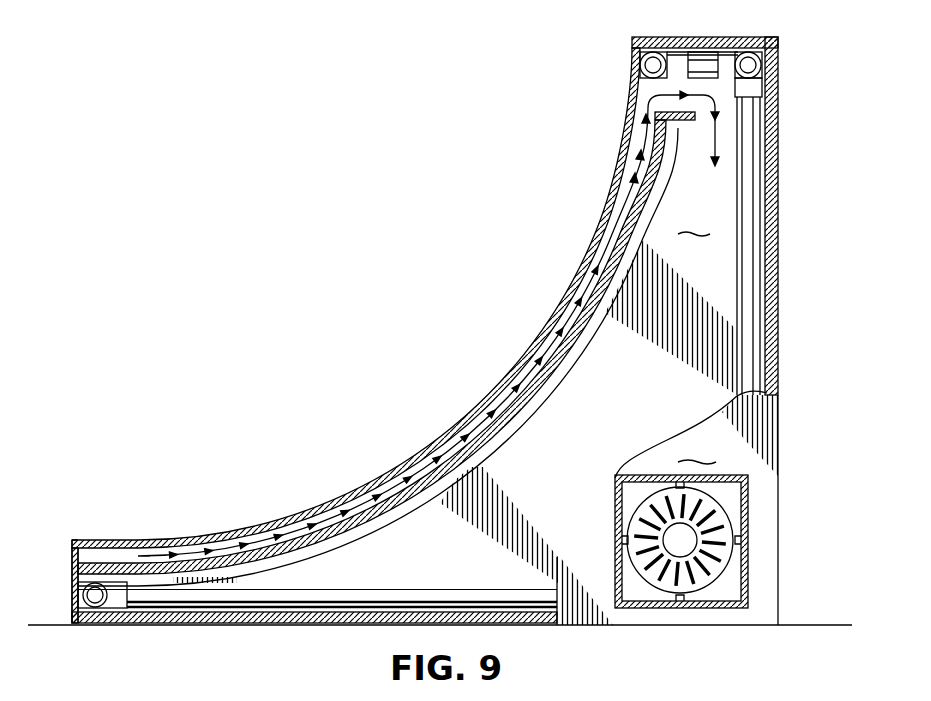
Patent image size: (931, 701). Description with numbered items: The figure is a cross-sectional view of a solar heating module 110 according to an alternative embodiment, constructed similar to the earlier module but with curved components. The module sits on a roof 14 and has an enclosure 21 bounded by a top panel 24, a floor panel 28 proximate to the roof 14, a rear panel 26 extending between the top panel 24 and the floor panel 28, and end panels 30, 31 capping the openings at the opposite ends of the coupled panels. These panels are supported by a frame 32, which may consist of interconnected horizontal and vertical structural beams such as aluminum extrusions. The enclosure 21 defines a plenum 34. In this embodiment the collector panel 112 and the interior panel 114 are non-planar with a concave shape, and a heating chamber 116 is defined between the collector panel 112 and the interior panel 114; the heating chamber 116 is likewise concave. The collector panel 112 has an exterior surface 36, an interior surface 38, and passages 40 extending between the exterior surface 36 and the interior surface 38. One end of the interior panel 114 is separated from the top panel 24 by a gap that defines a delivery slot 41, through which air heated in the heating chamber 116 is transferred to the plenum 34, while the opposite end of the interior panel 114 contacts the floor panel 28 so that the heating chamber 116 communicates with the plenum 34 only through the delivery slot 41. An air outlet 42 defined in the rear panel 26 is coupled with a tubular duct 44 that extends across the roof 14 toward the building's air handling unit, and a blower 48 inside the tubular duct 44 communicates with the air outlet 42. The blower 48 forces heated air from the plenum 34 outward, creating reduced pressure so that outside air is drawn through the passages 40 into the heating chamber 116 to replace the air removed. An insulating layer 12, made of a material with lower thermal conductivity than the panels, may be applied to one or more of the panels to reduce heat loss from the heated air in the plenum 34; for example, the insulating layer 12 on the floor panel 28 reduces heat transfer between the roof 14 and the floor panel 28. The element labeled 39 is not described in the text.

The insulating layer 12 is at (748, 42).
The roof 14 is at (47, 624).
The enclosure 21 is at (356, 298).
The top panel 24 is at (648, 42).
The rear panel 26 is at (770, 165).
The floor panel 28 is at (478, 612).
The end panel 30 is at (609, 432).
The end panel 31 is at (694, 223).
The frame 32 is at (703, 56).
The plenum 34 is at (686, 193).
The exterior surface 36 is at (356, 298).
The interior surface 38 is at (372, 351).
The return belt run 39 is at (140, 592).
The passages 40 is at (592, 253).
The delivery slot 41 is at (640, 113).
The air outlet 42 is at (640, 486).
The tubular duct 44 is at (632, 490).
The blower 48 is at (648, 596).
The solar heating module 110 is at (353, 250).
The collector panel 112 is at (448, 441).
The interior panel 114 is at (400, 513).
The heating chamber 116 is at (356, 298).